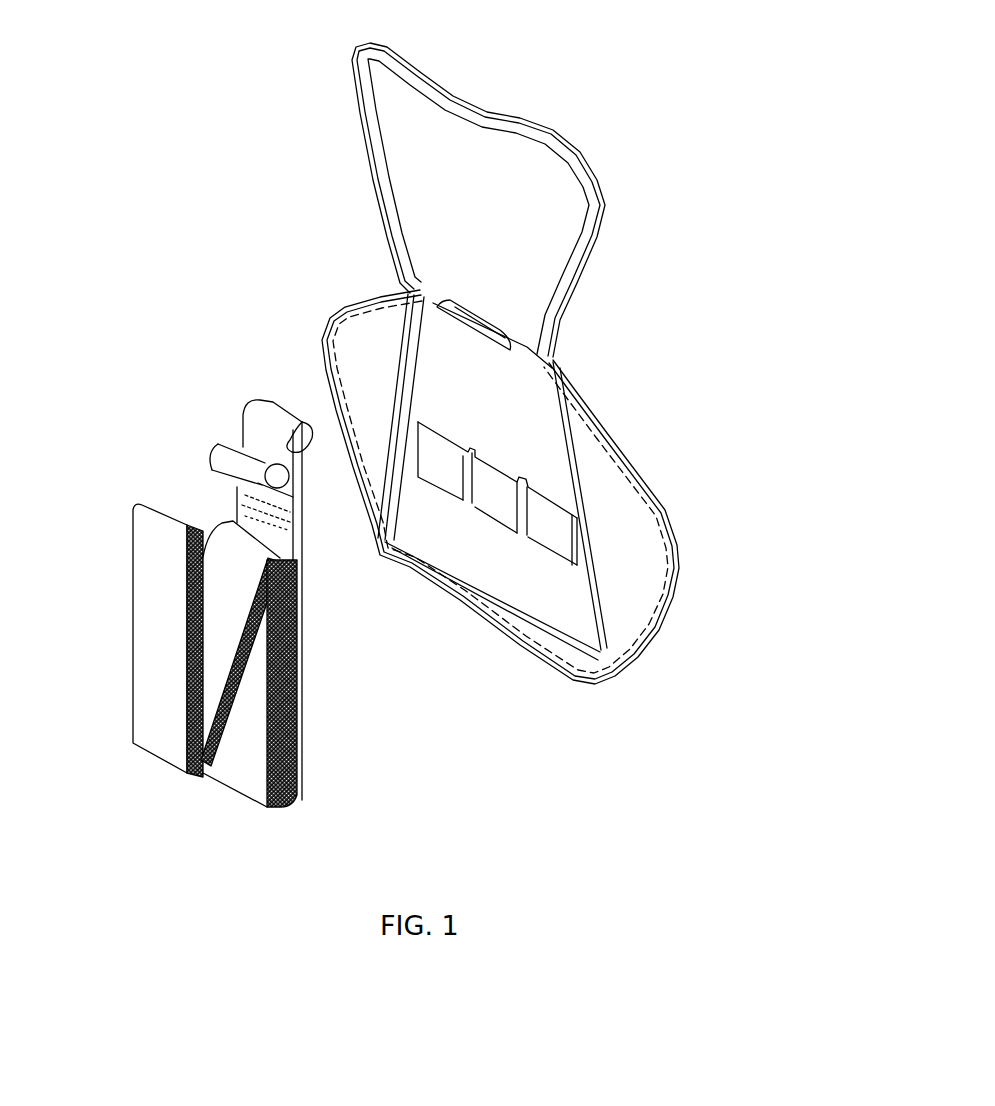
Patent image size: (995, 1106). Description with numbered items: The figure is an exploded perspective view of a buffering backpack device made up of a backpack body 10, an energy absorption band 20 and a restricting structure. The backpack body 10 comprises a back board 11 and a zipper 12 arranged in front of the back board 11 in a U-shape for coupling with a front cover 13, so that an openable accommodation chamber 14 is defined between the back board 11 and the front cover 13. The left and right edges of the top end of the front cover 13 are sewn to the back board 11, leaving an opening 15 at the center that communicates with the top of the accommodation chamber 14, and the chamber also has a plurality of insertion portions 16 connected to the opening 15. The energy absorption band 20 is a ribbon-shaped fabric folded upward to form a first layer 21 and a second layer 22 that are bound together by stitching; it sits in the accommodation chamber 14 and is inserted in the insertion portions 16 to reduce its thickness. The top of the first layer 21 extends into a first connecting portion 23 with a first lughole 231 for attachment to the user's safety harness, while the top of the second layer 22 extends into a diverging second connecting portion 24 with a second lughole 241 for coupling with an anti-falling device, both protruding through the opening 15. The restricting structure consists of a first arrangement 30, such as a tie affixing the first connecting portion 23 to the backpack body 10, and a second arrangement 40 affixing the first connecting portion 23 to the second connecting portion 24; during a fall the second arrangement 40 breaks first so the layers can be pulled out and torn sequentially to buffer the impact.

The backpack body 10 is at (640, 402).
The back board 11 is at (667, 600).
The zipper 12 is at (405, 300).
The front cover 13 is at (537, 120).
The accommodation chamber 14 is at (522, 598).
The opening 15 is at (467, 303).
The insertion portions 16 is at (418, 424).
The first arrangement 30 is at (500, 315).
The energy absorption band 20 is at (188, 398).
The first layer 21 is at (303, 747).
The second layer 22 is at (153, 602).
The first connecting portion 23 is at (500, 470).
The first lughole 231 is at (300, 420).
The second connecting portion 24 is at (237, 521).
The second lughole 241 is at (237, 448).
The second arrangement 40 is at (240, 482).